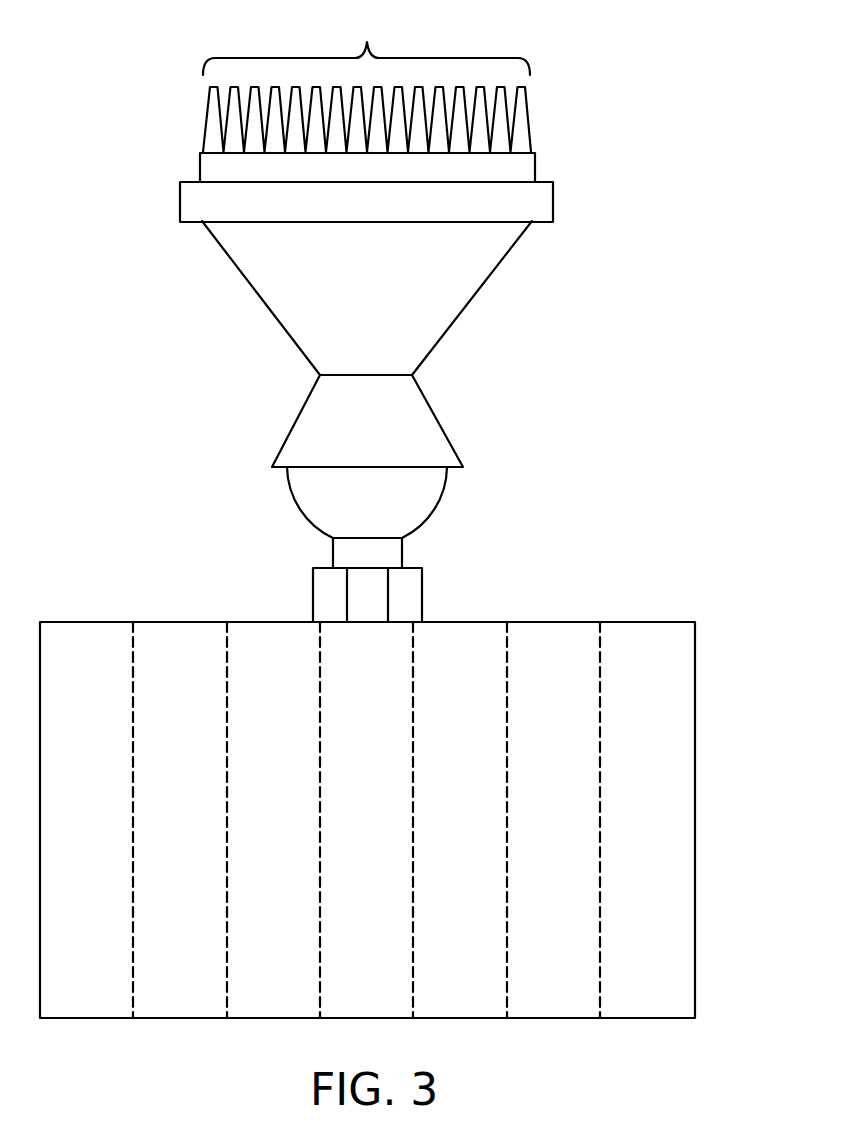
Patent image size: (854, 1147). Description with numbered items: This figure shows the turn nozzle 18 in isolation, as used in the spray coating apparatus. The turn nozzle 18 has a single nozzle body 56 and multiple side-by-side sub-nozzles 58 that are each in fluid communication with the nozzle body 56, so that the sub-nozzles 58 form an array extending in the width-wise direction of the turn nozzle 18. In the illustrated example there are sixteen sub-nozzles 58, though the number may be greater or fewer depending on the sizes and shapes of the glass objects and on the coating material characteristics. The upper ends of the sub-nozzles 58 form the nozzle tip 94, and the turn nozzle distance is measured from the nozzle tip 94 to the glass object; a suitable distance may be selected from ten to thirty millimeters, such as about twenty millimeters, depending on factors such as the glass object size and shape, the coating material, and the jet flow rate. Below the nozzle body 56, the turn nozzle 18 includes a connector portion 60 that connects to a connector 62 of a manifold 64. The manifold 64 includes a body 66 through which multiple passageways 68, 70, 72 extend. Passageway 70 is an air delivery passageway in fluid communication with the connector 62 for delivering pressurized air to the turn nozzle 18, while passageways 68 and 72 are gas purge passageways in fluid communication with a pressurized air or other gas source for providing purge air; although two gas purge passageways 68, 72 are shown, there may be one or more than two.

The turn nozzle 18 is at (638, 250).
The nozzle body 56 is at (238, 290).
The sub-nozzles 58 is at (528, 122).
The connector portion 60 is at (323, 560).
The connector 62 is at (422, 597).
The manifold 64 is at (602, 590).
The body 66 is at (695, 780).
The gas purge passageway 68 is at (133, 738).
The air delivery passageway 70 is at (320, 738).
The gas purge passageway 72 is at (508, 738).
The nozzle tip 94 is at (366, 42).